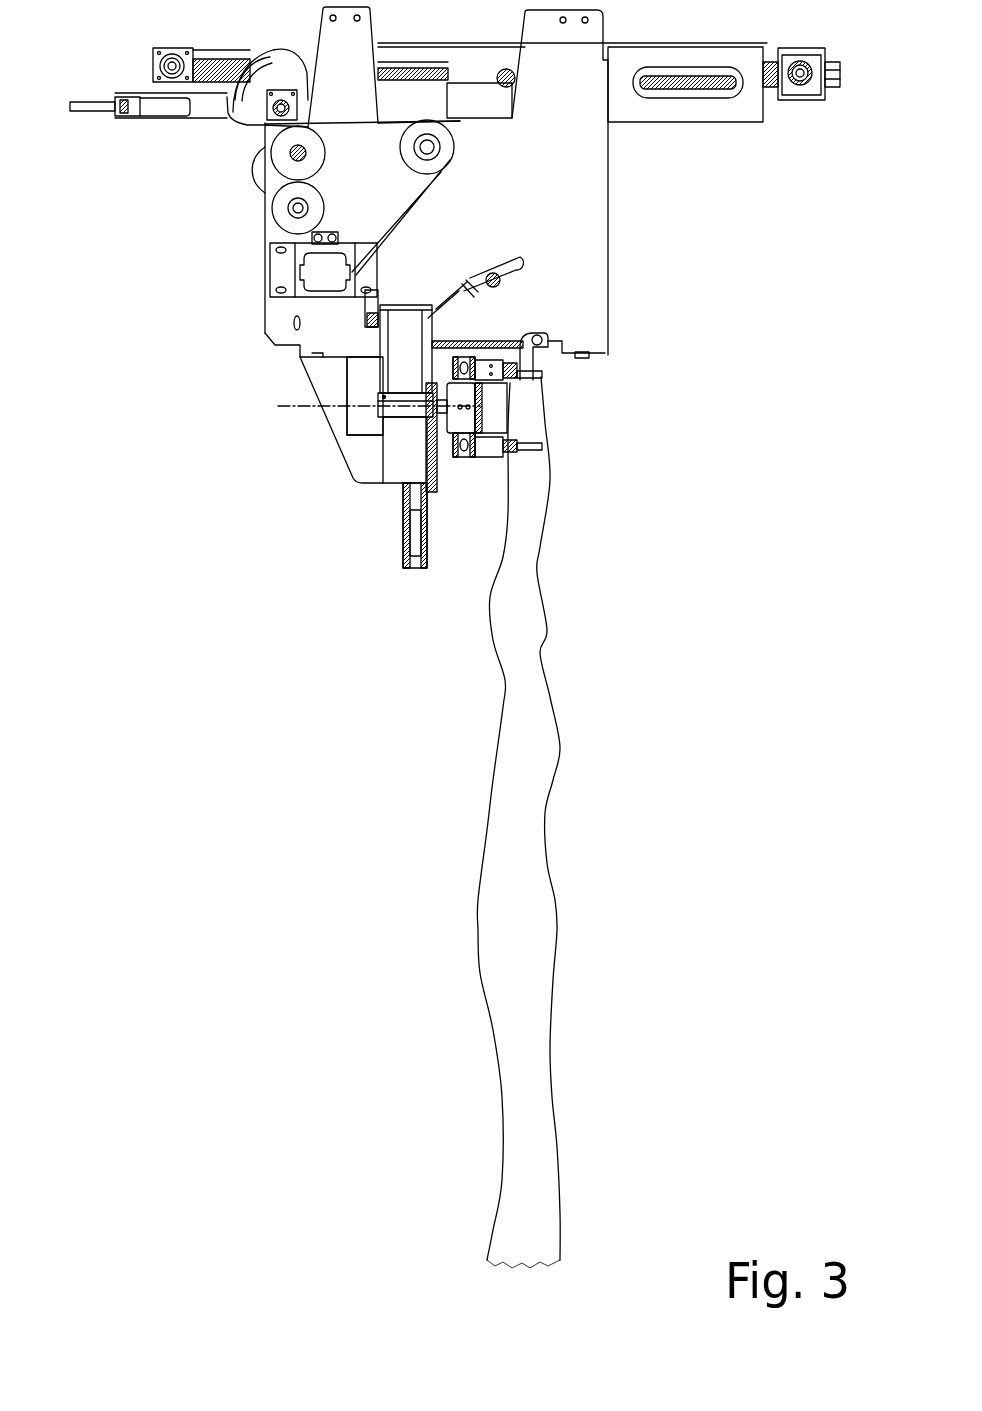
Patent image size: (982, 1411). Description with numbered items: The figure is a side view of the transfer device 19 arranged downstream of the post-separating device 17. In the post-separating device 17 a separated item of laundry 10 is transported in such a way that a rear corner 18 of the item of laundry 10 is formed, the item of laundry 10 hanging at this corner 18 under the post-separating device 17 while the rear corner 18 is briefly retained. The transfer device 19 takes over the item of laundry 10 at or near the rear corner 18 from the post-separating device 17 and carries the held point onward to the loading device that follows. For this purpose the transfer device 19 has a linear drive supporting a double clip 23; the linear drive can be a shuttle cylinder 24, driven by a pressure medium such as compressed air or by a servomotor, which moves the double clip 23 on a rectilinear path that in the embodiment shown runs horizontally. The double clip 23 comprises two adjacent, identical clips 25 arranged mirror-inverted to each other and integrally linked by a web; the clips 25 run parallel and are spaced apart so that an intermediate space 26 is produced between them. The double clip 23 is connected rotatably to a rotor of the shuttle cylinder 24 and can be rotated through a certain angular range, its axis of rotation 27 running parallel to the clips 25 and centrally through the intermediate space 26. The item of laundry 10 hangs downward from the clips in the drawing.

The item of laundry 10 is at (533, 1070).
The post-separating device 17 is at (238, 245).
The rear corner 18 is at (532, 355).
The transfer device 19 is at (395, 497).
The double clip 23 is at (462, 432).
The shuttle cylinder 24 is at (398, 458).
The clip 25 is at (508, 431).
The intermediate space 26 is at (493, 413).
The axis of rotation 27 is at (288, 407).